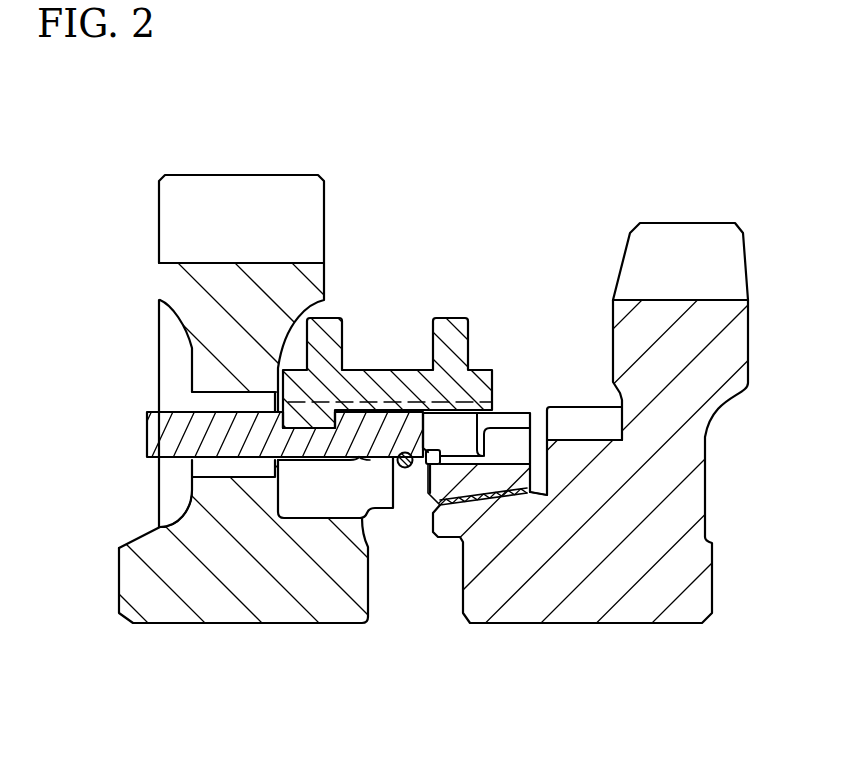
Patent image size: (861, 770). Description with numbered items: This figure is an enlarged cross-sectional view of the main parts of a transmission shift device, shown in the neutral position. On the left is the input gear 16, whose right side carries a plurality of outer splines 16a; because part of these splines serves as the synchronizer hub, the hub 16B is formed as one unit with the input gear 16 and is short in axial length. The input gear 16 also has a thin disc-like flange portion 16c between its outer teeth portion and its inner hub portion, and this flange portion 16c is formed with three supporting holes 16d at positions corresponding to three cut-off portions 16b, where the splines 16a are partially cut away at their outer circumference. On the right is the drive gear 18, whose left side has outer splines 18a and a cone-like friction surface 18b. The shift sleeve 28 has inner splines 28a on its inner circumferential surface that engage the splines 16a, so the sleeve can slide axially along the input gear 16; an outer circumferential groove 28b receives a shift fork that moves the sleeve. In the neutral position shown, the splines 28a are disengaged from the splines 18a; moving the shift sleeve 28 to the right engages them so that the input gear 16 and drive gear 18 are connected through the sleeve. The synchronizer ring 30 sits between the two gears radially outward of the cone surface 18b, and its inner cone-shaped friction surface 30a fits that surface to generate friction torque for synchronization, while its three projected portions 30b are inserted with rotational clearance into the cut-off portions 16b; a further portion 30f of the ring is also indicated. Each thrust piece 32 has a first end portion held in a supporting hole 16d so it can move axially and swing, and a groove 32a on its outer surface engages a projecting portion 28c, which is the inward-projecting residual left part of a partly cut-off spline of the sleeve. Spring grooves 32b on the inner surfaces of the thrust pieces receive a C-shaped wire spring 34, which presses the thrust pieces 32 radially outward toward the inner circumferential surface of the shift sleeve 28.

The input gear 16 is at (192, 225).
The outer splines 16a is at (423, 441).
The cut-off portions 16b is at (325, 487).
The hub 16B is at (403, 475).
The flange portion 16c is at (233, 382).
The supporting holes 16d is at (210, 468).
The drive gear 18 is at (697, 270).
The outer splines 18a is at (583, 423).
The friction surface 18b is at (533, 487).
The shift sleeve 28 is at (308, 400).
The inner splines 28a is at (512, 413).
The circumferential groove 28b is at (380, 363).
The projecting portion 28c is at (303, 412).
The synchronizer ring 30 is at (515, 492).
The friction surface 30a is at (481, 497).
The projected portions 30b is at (512, 448).
The cap end portion 30f is at (427, 445).
The thrust pieces 32 is at (233, 440).
The groove 32a is at (283, 418).
The spring grooves 32b is at (365, 462).
The spring 34 is at (410, 470).